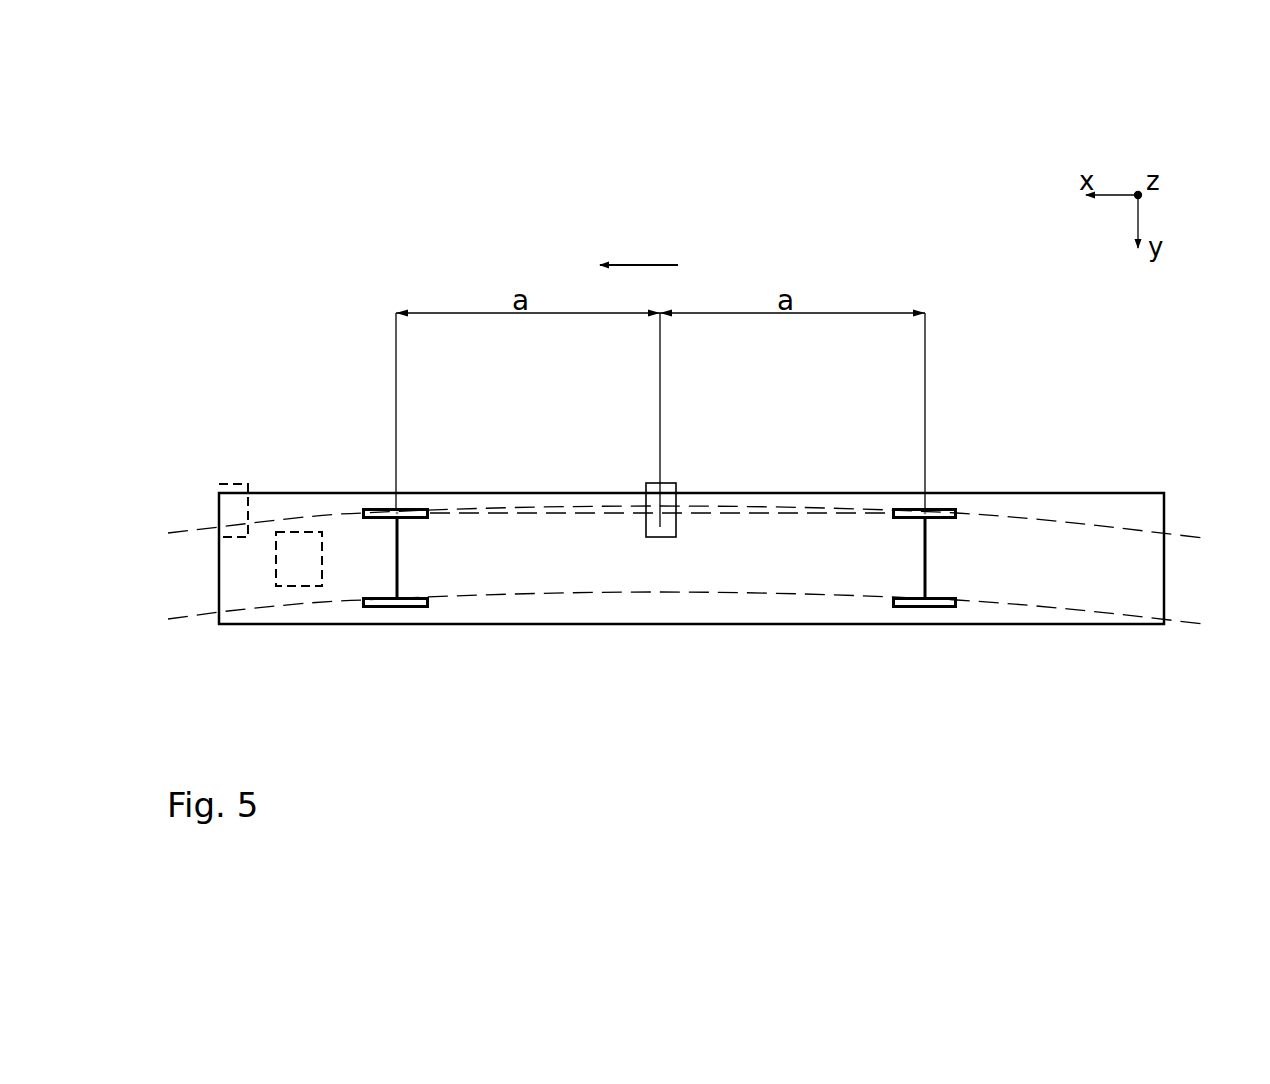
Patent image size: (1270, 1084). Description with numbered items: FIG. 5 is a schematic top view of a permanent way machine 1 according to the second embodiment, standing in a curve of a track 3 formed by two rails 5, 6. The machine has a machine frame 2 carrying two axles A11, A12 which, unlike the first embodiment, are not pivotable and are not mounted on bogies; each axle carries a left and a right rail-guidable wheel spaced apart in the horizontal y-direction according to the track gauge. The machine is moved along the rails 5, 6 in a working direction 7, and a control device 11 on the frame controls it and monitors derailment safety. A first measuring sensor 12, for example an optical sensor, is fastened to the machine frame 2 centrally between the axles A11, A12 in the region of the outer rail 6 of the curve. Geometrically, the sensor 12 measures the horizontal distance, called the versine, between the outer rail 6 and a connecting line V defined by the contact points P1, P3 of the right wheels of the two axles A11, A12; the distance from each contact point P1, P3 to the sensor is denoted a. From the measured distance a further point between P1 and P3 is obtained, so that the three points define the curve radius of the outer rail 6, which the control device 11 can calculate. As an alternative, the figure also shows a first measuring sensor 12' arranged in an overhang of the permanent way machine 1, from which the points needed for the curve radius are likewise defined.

The permanent way machine 1 is at (691, 537).
The machine frame 2 is at (1052, 493).
The track 3 is at (702, 555).
The rail 5 is at (1188, 623).
The outer rail of the curve 6 is at (1190, 535).
The working direction 7 is at (635, 265).
The control device 11 is at (305, 586).
The first measuring sensor 12 is at (678, 461).
The first measuring sensor 12' is at (244, 461).
The contact point P1 is at (409, 508).
The contact point P3 is at (936, 508).
The axle A11 is at (406, 558).
The axle A12 is at (935, 558).
The connecting line V is at (716, 513).